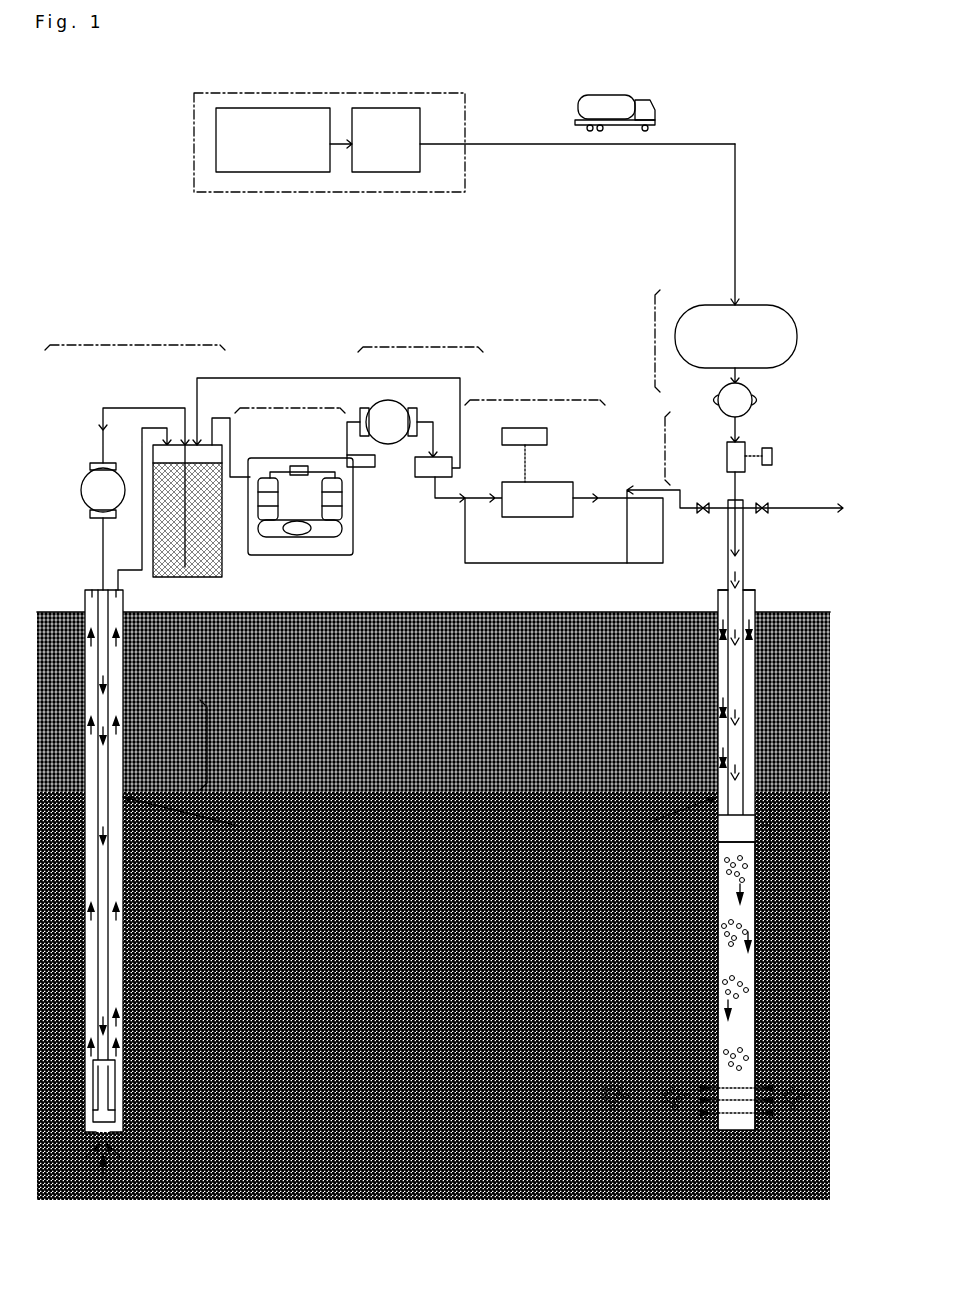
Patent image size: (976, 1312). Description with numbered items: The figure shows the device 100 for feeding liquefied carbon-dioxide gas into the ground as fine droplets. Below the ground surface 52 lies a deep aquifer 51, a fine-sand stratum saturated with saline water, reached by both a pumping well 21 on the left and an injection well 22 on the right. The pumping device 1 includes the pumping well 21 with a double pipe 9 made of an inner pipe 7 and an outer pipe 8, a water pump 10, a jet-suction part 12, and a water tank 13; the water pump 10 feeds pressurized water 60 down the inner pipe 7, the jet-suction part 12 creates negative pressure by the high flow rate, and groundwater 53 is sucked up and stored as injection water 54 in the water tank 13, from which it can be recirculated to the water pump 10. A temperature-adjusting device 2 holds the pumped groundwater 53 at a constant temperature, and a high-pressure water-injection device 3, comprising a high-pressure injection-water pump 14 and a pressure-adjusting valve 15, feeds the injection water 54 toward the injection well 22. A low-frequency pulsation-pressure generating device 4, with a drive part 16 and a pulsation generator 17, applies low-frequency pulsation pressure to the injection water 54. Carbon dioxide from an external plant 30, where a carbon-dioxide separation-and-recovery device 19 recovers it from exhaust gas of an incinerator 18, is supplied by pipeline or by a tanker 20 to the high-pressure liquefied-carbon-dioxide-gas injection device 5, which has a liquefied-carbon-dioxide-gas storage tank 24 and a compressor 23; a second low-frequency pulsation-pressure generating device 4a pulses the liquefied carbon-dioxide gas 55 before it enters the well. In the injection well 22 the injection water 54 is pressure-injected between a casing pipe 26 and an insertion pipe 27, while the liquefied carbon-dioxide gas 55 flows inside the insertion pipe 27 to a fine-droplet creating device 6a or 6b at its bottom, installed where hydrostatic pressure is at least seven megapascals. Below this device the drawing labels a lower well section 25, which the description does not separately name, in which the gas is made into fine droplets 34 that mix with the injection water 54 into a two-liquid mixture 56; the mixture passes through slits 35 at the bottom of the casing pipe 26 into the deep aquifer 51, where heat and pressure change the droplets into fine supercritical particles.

The device for feeding liquefied carbon-dioxide gas into the ground 100 is at (124, 267).
The pumping device 1 is at (92, 338).
The temperature-adjusting device 2 is at (296, 410).
The high-pressure water-injection device 3 is at (439, 341).
The low-frequency pulsation-pressure generating device 4 is at (547, 396).
The low-frequency pulsation-pressure generating device 4a is at (660, 439).
The high-pressure liquefied-carbon-dioxide-gas injection device 5 is at (645, 339).
The fine-droplet creating device 6a is at (787, 825).
The fine-droplet creating device 6b is at (782, 840).
The inner pipe 7 is at (108, 742).
The outer pipe 8 is at (118, 790).
The double pipe 9 is at (220, 745).
The water pump 10 is at (85, 500).
The jet-suction part 12 is at (115, 1085).
The water tank 13 is at (185, 440).
The high-pressure injection-water pump 14 is at (394, 401).
The pressure-adjusting valve 15 is at (414, 465).
The drive part 16 is at (546, 433).
The pulsation generator 17 is at (530, 518).
The incinerator 18 is at (265, 108).
The carbon-dioxide separation-and-recovery device 19 is at (385, 108).
The tanker 20 is at (605, 95).
The pumping well 21 is at (206, 816).
The injection well 22 is at (657, 816).
The compressor 23 is at (765, 400).
The liquefied-carbon-dioxide-gas storage tank 24 is at (785, 305).
The injection section 25 is at (755, 972).
The casing pipe 26 is at (755, 705).
The insertion pipe 27 is at (755, 670).
The plant 30 is at (447, 204).
The fine droplets 34 is at (730, 878).
The slits 35 is at (728, 1128).
The deep aquifer 51 is at (368, 1200).
The ground surface 52 is at (368, 612).
The groundwater 53 is at (123, 942).
The injection water 54 is at (196, 558).
The liquefied carbon-dioxide gas 55 is at (745, 555).
The two-liquid mixture 56 is at (746, 892).
The pressurized water 60 is at (122, 840).